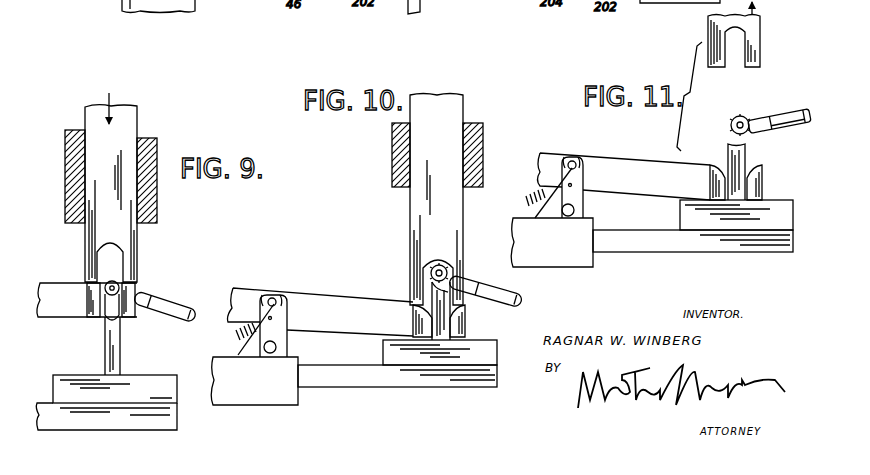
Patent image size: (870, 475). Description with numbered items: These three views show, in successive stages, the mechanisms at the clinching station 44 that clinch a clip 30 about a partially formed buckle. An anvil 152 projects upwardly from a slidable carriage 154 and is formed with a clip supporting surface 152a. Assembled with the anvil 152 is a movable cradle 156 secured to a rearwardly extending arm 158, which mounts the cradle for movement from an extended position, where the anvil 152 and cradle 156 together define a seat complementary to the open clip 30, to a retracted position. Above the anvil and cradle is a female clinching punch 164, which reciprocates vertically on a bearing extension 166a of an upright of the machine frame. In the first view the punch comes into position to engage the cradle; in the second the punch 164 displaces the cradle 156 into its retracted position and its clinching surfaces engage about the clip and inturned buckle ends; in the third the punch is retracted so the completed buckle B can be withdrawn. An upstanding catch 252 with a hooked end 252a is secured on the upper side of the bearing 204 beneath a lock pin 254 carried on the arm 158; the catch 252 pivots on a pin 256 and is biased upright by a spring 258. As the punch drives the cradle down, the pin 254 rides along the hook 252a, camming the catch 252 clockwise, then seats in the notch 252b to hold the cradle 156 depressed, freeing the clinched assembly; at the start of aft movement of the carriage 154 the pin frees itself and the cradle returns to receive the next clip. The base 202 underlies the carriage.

In FIG. 9, the clip 30 is at (105, 299).
In FIG. 10, the clip 30 is at (449, 267).
In FIG. 11, the clip 30 is at (733, 118).
In FIG. 9, the clinching station 44 is at (198, 237).
In FIG. 10, the clinching station 44 is at (388, 240).
In FIG. 11, the clinching station 44 is at (770, 95).
In FIG. 9, the anvil 152 is at (121, 371).
In FIG. 10, the anvil 152 is at (451, 334).
In FIG. 11, the anvil 152 is at (750, 158).
In FIG. 9, the clip supporting surface 152a is at (108, 321).
In FIG. 10, the clip supporting surface 152a is at (449, 291).
In FIG. 9, the slidable carriage 154 is at (60, 380).
In FIG. 10, the slidable carriage 154 is at (436, 356).
In FIG. 11, the slidable carriage 154 is at (702, 223).
In FIG. 9, the movable cradle 156 is at (133, 299).
In FIG. 10, the movable cradle 156 is at (466, 320).
In FIG. 11, the movable cradle 156 is at (763, 182).
In FIG. 9, the rearwardly extending arm 158 is at (48, 284).
In FIG. 10, the rearwardly extending arm 158 is at (346, 302).
In FIG. 11, the rearwardly extending arm 158 is at (622, 161).
In FIG. 9, the female clinching punch 164 is at (139, 118).
In FIG. 10, the female clinching punch 164 is at (441, 103).
In FIG. 11, the female clinching punch 164 is at (761, 30).
In FIG. 9, the bearing extension 166a is at (65, 170).
In FIG. 10, the bearing extension 166a is at (398, 145).
In FIG. 9, the base 202 is at (177, 425).
In FIG. 10, the base 202 is at (400, 381).
In FIG. 11, the base 202 is at (746, 244).
In FIG. 10, the bearing 204 is at (281, 398).
In FIG. 11, the bearing 204 is at (585, 262).
In FIG. 10, the upstanding catch 252 is at (288, 313).
In FIG. 11, the upstanding catch 252 is at (584, 184).
In FIG. 10, the hooked end 252a is at (262, 300).
In FIG. 11, the hooked end 252a is at (557, 160).
In FIG. 10, the seating notch 252b is at (276, 300).
In FIG. 11, the seating notch 252b is at (583, 162).
In FIG. 10, the lock pin 254 is at (270, 306).
In FIG. 11, the lock pin 254 is at (572, 161).
In FIG. 10, the pin 256 is at (268, 354).
In FIG. 11, the pin 256 is at (566, 217).
In FIG. 10, the spring 258 is at (234, 338).
In FIG. 11, the spring 258 is at (533, 199).
In FIG. 9, the buckle B is at (169, 306).
In FIG. 10, the buckle B is at (528, 300).
In FIG. 11, the buckle B is at (792, 118).